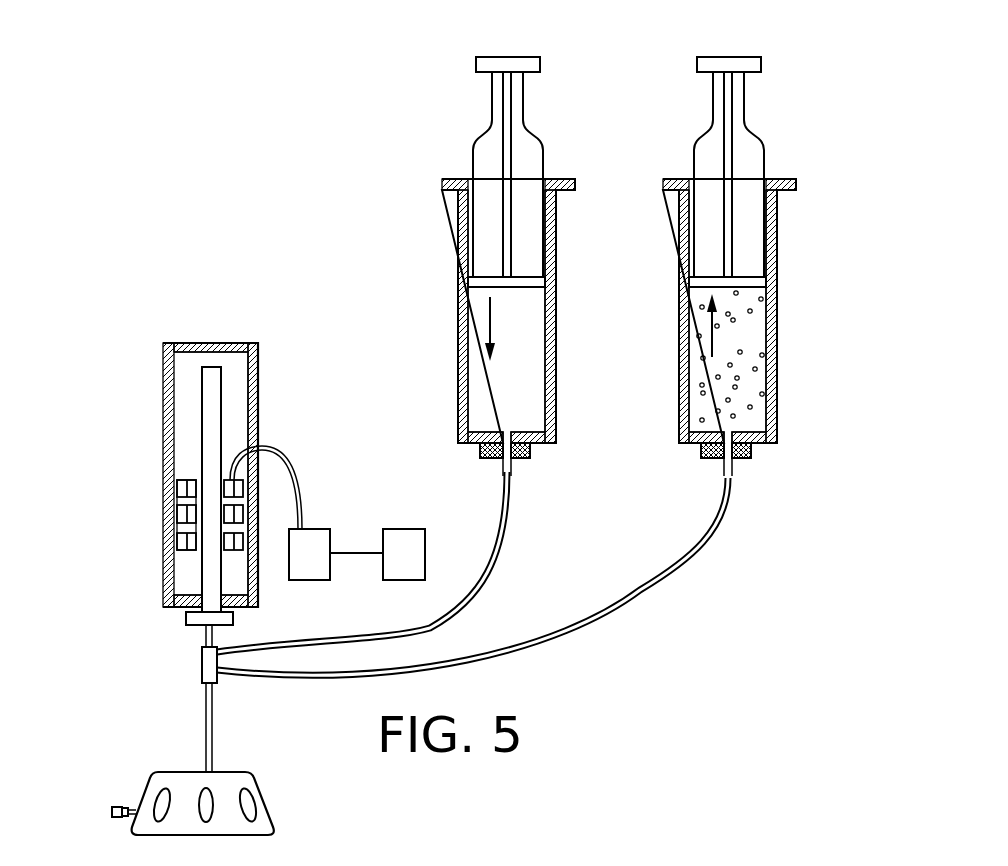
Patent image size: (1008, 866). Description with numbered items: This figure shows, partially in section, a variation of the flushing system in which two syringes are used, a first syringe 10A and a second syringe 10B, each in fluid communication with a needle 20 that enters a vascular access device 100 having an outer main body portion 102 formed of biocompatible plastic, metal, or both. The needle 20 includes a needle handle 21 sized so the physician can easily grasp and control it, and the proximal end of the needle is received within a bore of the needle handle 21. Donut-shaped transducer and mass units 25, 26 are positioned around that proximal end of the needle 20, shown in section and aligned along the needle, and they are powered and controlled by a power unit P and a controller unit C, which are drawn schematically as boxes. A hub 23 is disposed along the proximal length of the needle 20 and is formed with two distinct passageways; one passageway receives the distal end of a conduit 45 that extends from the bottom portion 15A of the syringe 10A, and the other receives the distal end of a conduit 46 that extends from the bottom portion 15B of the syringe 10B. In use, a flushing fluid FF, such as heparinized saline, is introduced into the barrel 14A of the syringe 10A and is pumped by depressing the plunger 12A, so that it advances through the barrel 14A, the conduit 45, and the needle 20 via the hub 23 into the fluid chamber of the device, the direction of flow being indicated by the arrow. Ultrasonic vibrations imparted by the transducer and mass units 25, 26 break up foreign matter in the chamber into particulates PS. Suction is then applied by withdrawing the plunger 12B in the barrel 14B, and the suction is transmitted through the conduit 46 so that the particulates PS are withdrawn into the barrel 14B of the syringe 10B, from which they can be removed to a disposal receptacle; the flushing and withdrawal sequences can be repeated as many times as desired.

The first syringe 10A is at (518, 274).
The second syringe 10B is at (772, 282).
The syringe plunger 12A is at (530, 135).
The plunger 12B is at (779, 172).
The syringe barrel 14A is at (558, 335).
The syringe barrel 14B is at (766, 335).
The bottom portion of syringe 10A 15A is at (463, 452).
The bottom portion of syringe 10B 15B is at (686, 489).
The needle 20 is at (205, 755).
The needle handle 21 is at (186, 542).
The hub 23 is at (202, 665).
The transducer and mass unit 25 is at (195, 482).
The transducer and mass unit 26 is at (178, 490).
The conduit 45 is at (483, 583).
The conduit 46 is at (718, 562).
The vascular access device 100 is at (204, 773).
The outer main body portion 102 is at (245, 772).
The flushing fluid FF is at (498, 378).
The particulates PS is at (799, 439).
The controller unit C is at (309, 554).
The power unit P is at (377, 554).